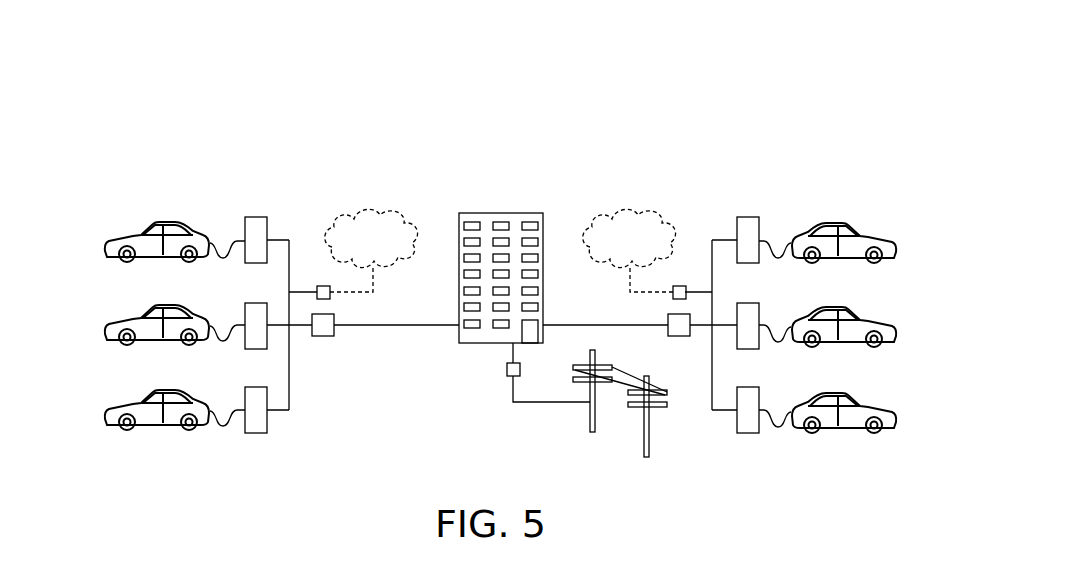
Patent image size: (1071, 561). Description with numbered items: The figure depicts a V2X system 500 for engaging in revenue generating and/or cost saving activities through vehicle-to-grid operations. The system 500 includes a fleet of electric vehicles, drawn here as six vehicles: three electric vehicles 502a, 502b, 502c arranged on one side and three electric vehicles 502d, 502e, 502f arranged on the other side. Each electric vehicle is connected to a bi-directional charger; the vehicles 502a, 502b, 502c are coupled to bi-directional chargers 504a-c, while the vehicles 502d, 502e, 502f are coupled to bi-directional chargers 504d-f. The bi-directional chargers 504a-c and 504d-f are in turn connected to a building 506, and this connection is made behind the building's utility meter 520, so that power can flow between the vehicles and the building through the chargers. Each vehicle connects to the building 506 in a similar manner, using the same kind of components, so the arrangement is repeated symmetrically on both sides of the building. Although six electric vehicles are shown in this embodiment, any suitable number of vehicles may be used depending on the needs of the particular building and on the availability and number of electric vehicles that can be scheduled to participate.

The V2X system 500 is at (256, 116).
The electric vehicle 502a is at (92, 243).
The electric vehicle 502b is at (92, 326).
The electric vehicle 502c is at (92, 411).
The electric vehicle 502d is at (912, 242).
The electric vehicle 502e is at (912, 326).
The electric vehicle 502f is at (912, 412).
The bi-directional chargers 504a-c is at (256, 196).
The bi-directional chargers 504d-f is at (746, 193).
The building 506 is at (452, 221).
The utility meter 520 is at (667, 451).